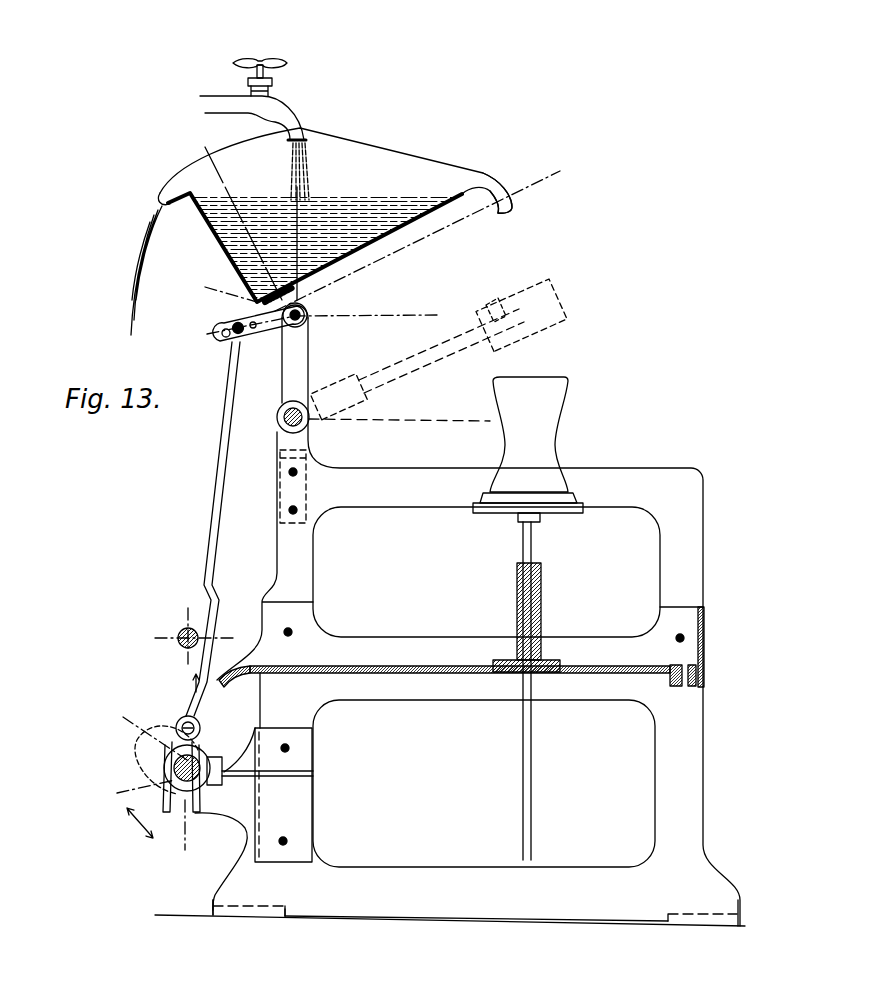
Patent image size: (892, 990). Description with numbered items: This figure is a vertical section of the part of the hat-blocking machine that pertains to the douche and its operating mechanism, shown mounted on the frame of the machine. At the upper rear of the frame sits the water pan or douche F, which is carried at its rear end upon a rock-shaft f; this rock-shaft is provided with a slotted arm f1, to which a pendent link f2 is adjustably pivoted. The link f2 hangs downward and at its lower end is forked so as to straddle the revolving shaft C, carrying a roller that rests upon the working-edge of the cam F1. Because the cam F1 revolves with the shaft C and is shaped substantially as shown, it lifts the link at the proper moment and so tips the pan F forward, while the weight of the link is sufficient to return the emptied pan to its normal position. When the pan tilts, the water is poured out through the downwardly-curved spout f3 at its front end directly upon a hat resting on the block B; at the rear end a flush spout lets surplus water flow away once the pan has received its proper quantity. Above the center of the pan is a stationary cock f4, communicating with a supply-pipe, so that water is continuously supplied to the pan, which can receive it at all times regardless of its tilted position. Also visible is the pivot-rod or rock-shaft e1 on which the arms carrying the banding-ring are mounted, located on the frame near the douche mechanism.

The frame A is at (450, 615).
The block B is at (528, 618).
The revolving shaft C is at (149, 824).
The water pan or douche F is at (345, 231).
The rock-shaft f is at (322, 320).
The slotted arm f1 is at (262, 337).
The pendent link f2 is at (209, 541).
The downwardly-curved spout f3 is at (504, 204).
The stationary cock f4 is at (262, 129).
The pivot-rod or rock-shaft e1 is at (277, 417).
The cam F1 is at (215, 780).